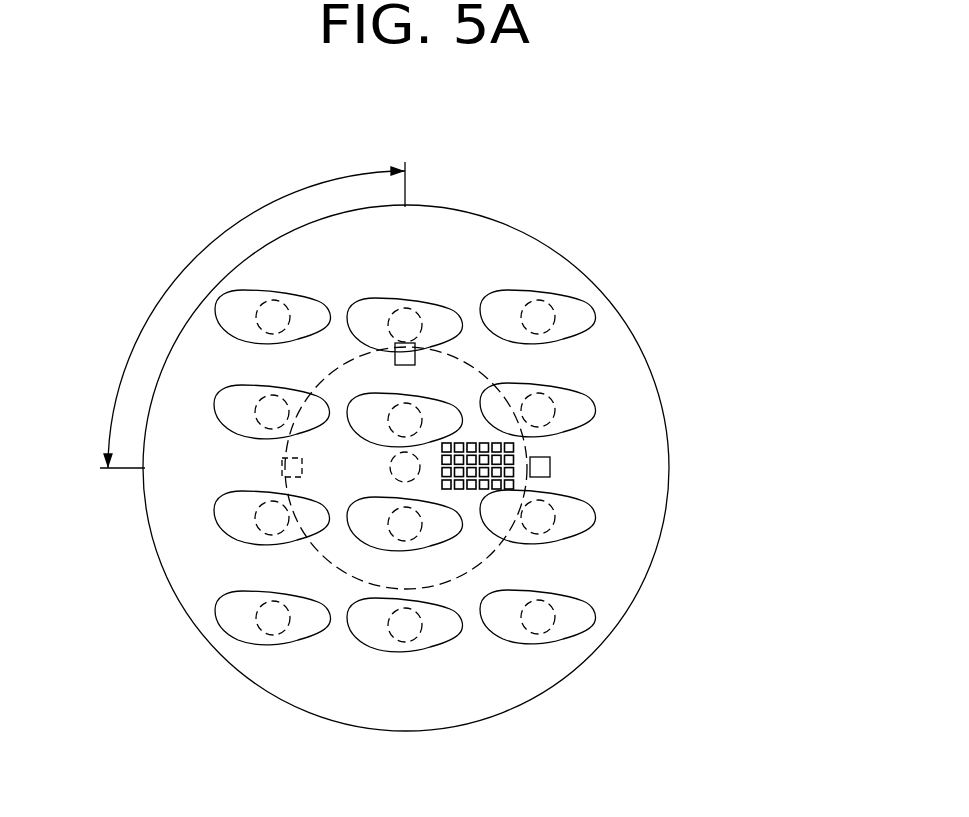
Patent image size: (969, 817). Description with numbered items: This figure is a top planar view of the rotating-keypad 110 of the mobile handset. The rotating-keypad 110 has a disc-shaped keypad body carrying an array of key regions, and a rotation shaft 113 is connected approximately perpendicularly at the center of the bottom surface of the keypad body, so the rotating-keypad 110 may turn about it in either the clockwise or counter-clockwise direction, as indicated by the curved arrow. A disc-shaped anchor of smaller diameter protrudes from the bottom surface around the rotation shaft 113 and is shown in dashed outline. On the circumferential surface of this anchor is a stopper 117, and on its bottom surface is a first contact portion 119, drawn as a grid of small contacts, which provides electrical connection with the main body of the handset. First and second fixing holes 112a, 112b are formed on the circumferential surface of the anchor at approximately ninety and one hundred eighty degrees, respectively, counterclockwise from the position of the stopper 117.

The rotating-keypad 110 is at (456, 227).
The first fixing hole 112a is at (415, 355).
The second fixing hole 112b is at (282, 468).
The rotation shaft 113 is at (408, 453).
The stopper 117 is at (550, 468).
The first contact portion 119 is at (488, 490).